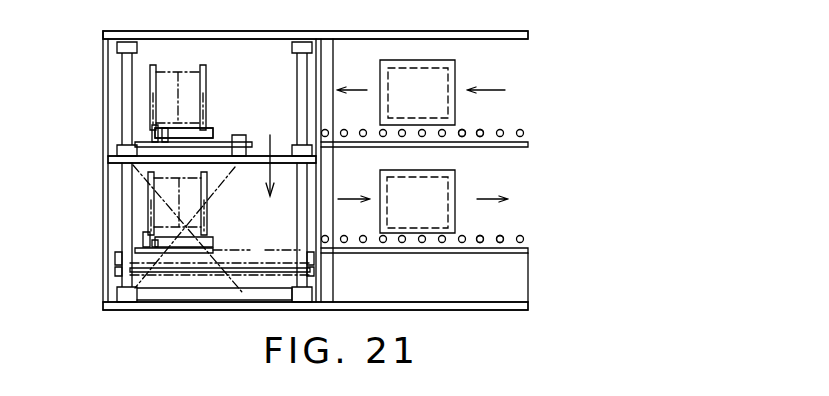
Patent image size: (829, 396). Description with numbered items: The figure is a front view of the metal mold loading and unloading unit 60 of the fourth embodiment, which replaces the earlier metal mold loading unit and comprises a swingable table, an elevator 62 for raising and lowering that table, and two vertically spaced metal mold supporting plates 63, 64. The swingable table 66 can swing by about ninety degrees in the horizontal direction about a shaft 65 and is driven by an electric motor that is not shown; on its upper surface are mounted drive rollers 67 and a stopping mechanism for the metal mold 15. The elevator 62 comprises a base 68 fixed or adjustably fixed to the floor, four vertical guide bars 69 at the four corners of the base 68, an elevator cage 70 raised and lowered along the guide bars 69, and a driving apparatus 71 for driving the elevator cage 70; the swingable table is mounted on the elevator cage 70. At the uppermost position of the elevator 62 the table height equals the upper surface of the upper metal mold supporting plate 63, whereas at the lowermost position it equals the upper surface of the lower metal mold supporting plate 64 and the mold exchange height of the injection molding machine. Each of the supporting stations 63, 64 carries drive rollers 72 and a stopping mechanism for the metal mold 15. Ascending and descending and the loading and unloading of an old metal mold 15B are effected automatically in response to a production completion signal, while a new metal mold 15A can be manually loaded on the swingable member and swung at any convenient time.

The metal mold loading and unloading unit 60 is at (447, 24).
The elevator 62 is at (90, 78).
The metal mold 15 is at (190, 78).
The new metal mold 15A is at (455, 66).
The old metal mold 15B is at (455, 182).
The upper metal mold supporting plate 63 is at (536, 140).
The metal mold supporting plate 64 is at (463, 254).
The shaft 65 is at (247, 137).
The swingable table 66 is at (223, 143).
The drive rollers 67 is at (185, 133).
The base 68 is at (184, 305).
The vertical guide bars 69 is at (125, 225).
The elevator cage 70 is at (133, 170).
The driving apparatus 71 is at (210, 200).
The drive rollers 72 is at (482, 128).